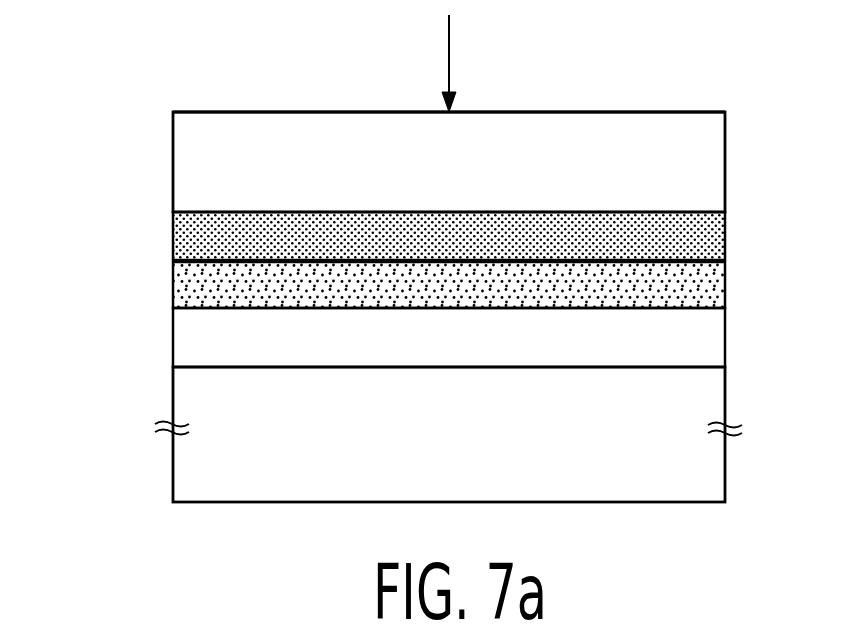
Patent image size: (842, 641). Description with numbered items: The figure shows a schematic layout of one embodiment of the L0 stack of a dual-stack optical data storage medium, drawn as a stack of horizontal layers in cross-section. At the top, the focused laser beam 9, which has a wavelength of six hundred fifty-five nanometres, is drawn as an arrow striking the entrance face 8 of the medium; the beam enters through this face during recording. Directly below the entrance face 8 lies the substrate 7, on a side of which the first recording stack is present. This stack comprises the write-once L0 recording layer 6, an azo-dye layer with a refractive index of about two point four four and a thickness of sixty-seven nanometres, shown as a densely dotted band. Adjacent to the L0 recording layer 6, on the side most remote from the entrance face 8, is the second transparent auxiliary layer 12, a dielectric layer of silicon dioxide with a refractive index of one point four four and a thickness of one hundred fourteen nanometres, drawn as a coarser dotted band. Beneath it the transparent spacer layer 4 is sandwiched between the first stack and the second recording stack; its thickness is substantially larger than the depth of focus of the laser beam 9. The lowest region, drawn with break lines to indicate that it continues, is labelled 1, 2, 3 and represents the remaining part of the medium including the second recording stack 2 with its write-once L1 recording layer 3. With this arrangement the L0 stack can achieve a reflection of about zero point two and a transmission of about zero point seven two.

The substrate layer 1 is at (396, 434).
The second recording stack 2 is at (396, 434).
The L1 recording layer 3 is at (205, 400).
The transparent spacer layer 4 is at (205, 343).
The L0 recording layer 6 is at (205, 238).
The substrate 7 is at (205, 158).
The entrance face 8 is at (258, 112).
The focused laser beam 9 is at (449, 54).
The second transparent auxiliary layer 12 is at (205, 282).